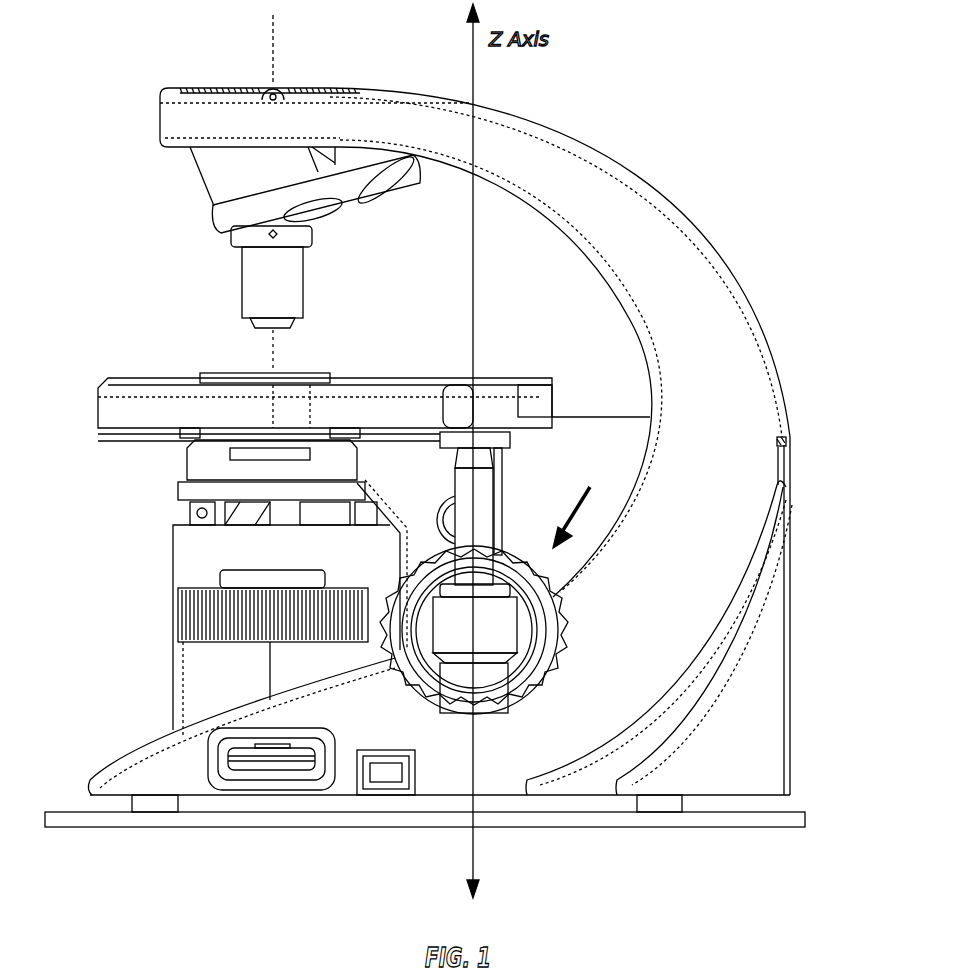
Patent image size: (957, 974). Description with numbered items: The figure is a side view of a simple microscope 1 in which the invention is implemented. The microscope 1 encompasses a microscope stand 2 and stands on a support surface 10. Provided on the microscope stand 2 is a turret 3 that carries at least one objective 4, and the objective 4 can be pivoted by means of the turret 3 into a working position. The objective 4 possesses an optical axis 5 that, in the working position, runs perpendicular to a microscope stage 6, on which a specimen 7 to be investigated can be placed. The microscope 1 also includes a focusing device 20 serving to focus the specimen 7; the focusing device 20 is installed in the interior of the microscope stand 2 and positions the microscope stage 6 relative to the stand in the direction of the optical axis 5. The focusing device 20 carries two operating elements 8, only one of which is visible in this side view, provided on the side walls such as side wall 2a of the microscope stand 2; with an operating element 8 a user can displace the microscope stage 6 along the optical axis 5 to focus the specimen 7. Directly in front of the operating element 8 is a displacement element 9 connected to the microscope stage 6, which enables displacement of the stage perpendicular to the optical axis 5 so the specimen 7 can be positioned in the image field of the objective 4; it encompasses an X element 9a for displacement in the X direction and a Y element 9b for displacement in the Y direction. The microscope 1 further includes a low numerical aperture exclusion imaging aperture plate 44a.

The microscope 1 is at (812, 230).
The microscope stand 2 is at (630, 170).
The side wall 2a is at (745, 318).
The turret 3 is at (214, 213).
The objective 4 is at (300, 272).
The low numerical aperture exclusion imaging aperture plate 44a is at (297, 328).
The optical axis 5 is at (280, 62).
The microscope stage 6 is at (108, 403).
The specimen 7 is at (237, 372).
The operating element 8 is at (560, 632).
The displacement element 9 is at (486, 498).
The X element 9a is at (505, 600).
The Y element 9b is at (458, 705).
The support surface 10 is at (300, 822).
The focusing device 20 is at (580, 500).